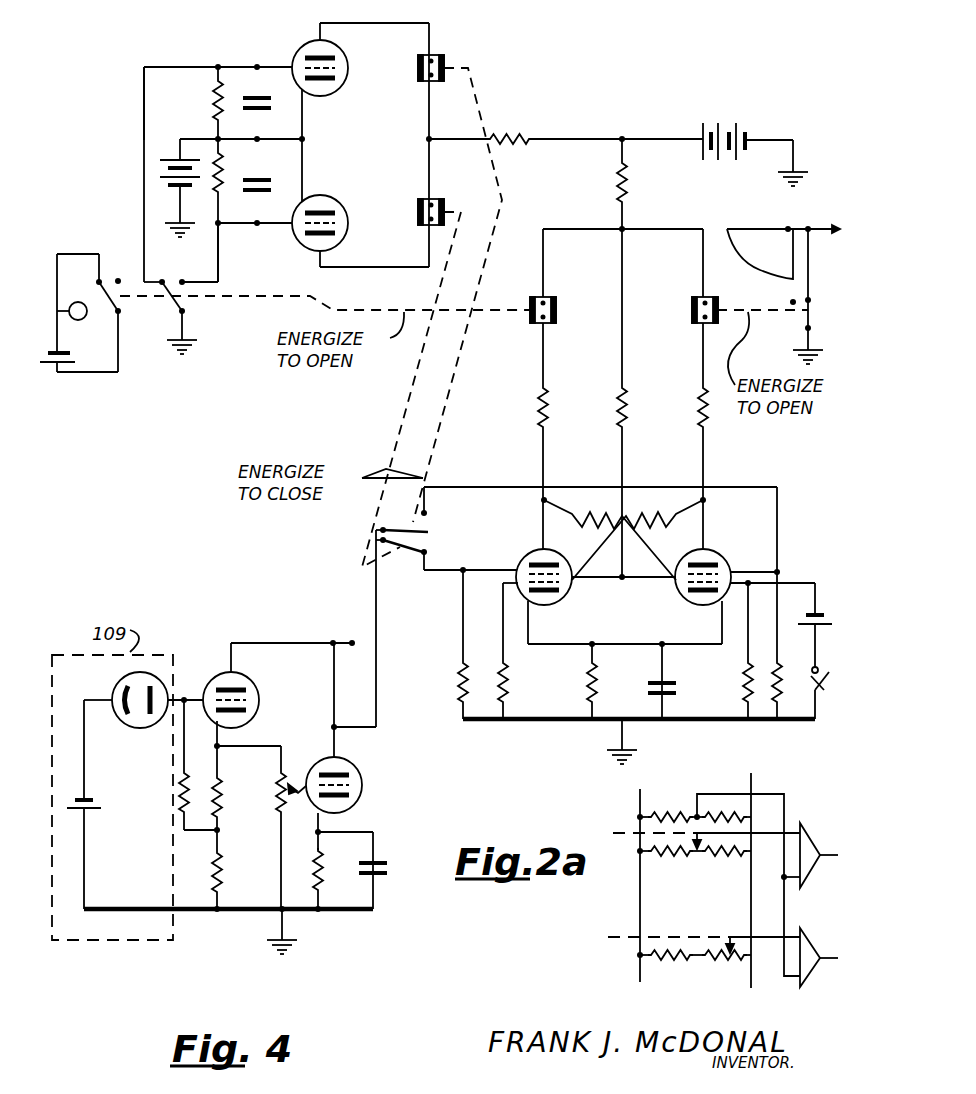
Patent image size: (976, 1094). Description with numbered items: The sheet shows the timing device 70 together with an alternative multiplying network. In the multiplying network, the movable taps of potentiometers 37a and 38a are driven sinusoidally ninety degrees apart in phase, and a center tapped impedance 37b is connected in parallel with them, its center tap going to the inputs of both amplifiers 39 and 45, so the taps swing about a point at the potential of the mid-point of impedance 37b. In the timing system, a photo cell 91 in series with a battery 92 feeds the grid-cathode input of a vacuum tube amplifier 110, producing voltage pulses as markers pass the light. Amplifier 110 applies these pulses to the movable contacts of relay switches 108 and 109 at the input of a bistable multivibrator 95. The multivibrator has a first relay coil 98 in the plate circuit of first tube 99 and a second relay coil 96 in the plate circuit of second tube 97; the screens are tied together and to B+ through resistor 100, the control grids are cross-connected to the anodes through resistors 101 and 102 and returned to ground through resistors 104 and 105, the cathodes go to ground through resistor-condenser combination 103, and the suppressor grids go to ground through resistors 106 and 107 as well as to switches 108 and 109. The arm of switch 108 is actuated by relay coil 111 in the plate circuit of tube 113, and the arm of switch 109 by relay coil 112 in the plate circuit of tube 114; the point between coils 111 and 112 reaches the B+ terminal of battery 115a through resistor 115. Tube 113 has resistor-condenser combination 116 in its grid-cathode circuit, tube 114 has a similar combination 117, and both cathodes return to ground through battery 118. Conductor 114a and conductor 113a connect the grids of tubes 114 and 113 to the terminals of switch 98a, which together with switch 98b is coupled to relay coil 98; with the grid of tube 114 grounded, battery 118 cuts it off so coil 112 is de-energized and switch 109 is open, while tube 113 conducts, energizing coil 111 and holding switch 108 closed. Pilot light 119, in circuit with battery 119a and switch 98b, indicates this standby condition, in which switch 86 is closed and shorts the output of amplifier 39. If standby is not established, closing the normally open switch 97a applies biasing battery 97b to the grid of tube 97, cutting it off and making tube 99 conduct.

In FIG. 4, the timing device 70 is at (540, 37).
In FIG. 4, the tube 114 is at (298, 52).
In FIG. 4, the conductor 114a is at (144, 111).
In FIG. 4, the resistor-capacitor combination 117 is at (252, 96).
In FIG. 4, the resistor-condenser combination 116 is at (252, 163).
In FIG. 4, the battery 118 is at (160, 170).
In FIG. 4, the tube 113 is at (300, 240).
In FIG. 4, the conductor 113a is at (220, 256).
In FIG. 4, the relay coil 112 is at (419, 76).
In FIG. 4, the relay coil 111 is at (419, 220).
In FIG. 4, the resistor 115 is at (512, 135).
In FIG. 4, the battery 115a is at (740, 123).
In FIG. 4, the amplifier 39 is at (780, 257).
In FIG. 2A, the amplifier 39 is at (806, 836).
In FIG. 4, the first relay coil 98 is at (556, 310).
In FIG. 4, the second relay coil 96 is at (692, 312).
In FIG. 4, the switch 86 is at (800, 320).
In FIG. 4, the resistor 100 is at (627, 396).
In FIG. 4, the bistable multivibrator 95 is at (507, 451).
In FIG. 4, the relay switch 109 is at (434, 518).
In FIG. 4, the relay switch 108 is at (430, 552).
In FIG. 4, the first tube 99 is at (530, 552).
In FIG. 4, the second tube 97 is at (722, 553).
In FIG. 4, the biasing battery 97b is at (820, 610).
In FIG. 4, the single-pole single-throw switch 97a is at (822, 688).
In FIG. 4, the resistor 102 is at (610, 535).
In FIG. 4, the resistor 101 is at (637, 535).
In FIG. 4, the resistor 106 is at (460, 682).
In FIG. 4, the resistor 104 is at (508, 686).
In FIG. 4, the resistor-condenser combination 103 is at (636, 701).
In FIG. 4, the resistor 105 is at (744, 680).
In FIG. 4, the resistor 107 is at (775, 720).
In FIG. 4, the switch 98b is at (124, 322).
In FIG. 4, the switch 98a is at (194, 322).
In FIG. 4, the pilot light 119 is at (85, 318).
In FIG. 4, the battery 119a is at (78, 358).
In FIG. 4, the photo cell 91 is at (138, 728).
In FIG. 4, the battery 92 is at (100, 803).
In FIG. 4, the vacuum tube amplifier 110 is at (304, 710).
In FIG. 2A, the center tapped impedance 37b is at (688, 814).
In FIG. 2A, the potentiometer 37a is at (712, 854).
In FIG. 2A, the potentiometer 38a is at (720, 957).
In FIG. 2A, the amplifier 45 is at (806, 940).